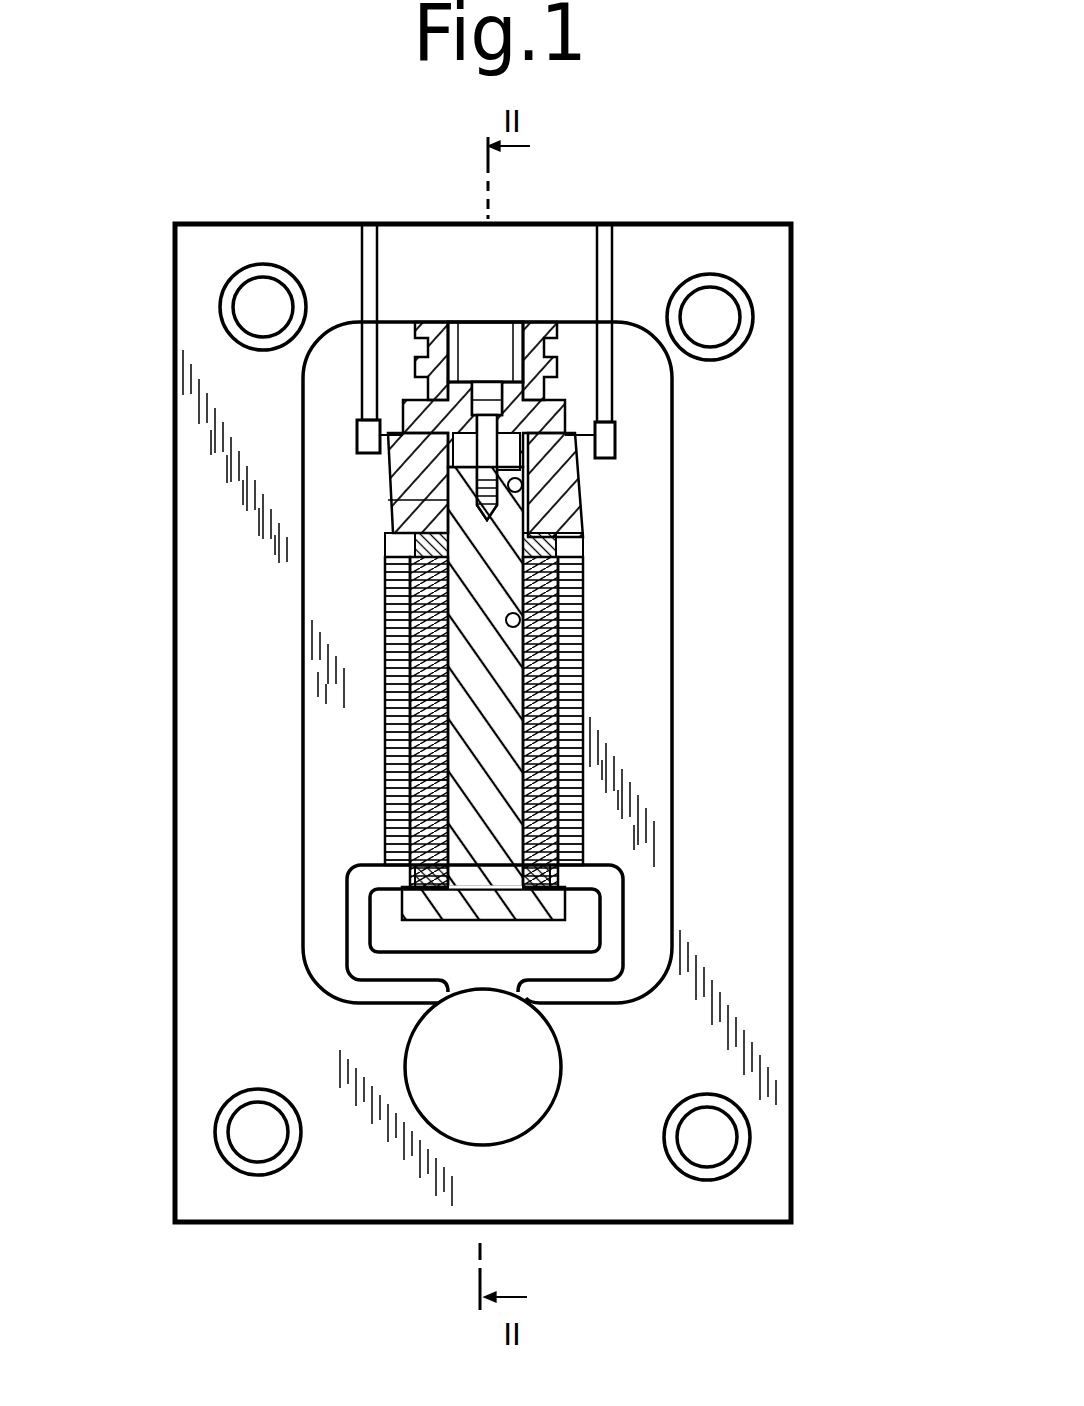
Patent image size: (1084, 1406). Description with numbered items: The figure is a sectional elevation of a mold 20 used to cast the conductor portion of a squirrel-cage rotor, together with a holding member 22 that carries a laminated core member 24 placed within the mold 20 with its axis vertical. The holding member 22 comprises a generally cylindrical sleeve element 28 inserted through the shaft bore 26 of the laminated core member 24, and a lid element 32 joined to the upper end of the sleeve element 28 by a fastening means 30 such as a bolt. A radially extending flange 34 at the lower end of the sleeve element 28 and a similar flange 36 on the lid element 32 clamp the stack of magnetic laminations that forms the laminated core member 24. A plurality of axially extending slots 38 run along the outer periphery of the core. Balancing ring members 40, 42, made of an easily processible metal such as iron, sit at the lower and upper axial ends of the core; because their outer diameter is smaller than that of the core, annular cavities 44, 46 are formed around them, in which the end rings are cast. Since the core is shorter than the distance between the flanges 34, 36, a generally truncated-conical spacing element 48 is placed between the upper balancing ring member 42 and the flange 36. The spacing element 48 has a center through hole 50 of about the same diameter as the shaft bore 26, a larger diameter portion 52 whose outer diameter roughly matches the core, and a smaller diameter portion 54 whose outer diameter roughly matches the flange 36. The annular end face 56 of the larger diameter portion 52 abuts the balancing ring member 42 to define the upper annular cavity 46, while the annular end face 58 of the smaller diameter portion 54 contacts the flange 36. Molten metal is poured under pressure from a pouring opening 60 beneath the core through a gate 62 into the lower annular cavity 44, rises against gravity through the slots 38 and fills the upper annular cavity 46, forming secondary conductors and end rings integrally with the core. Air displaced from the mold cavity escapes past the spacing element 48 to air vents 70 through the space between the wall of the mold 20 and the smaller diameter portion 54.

The mold 20 is at (675, 767).
The holding member 22 is at (470, 679).
The laminated core member 24 is at (587, 688).
The shaft bore 26 is at (585, 610).
The sleeve element 28 is at (408, 775).
The fastening means 30 is at (480, 370).
The lid element 32 is at (538, 345).
The flange 34 is at (415, 905).
The flange 36 is at (578, 400).
The slots 38 is at (385, 640).
The balancing ring member 40 is at (420, 878).
The balancing ring member 42 is at (418, 547).
The annular cavity 44 is at (575, 880).
The annular cavity 46 is at (583, 547).
The spacing element 48 is at (405, 498).
The center through hole 50 is at (585, 478).
The larger diameter portion 52 is at (392, 537).
The smaller diameter portion 54 is at (357, 443).
The annular end face 56 is at (585, 510).
The annular end face 58 is at (597, 458).
The pouring opening 60 is at (545, 1113).
The gate 62 is at (350, 935).
The air vents 70 is at (362, 290).